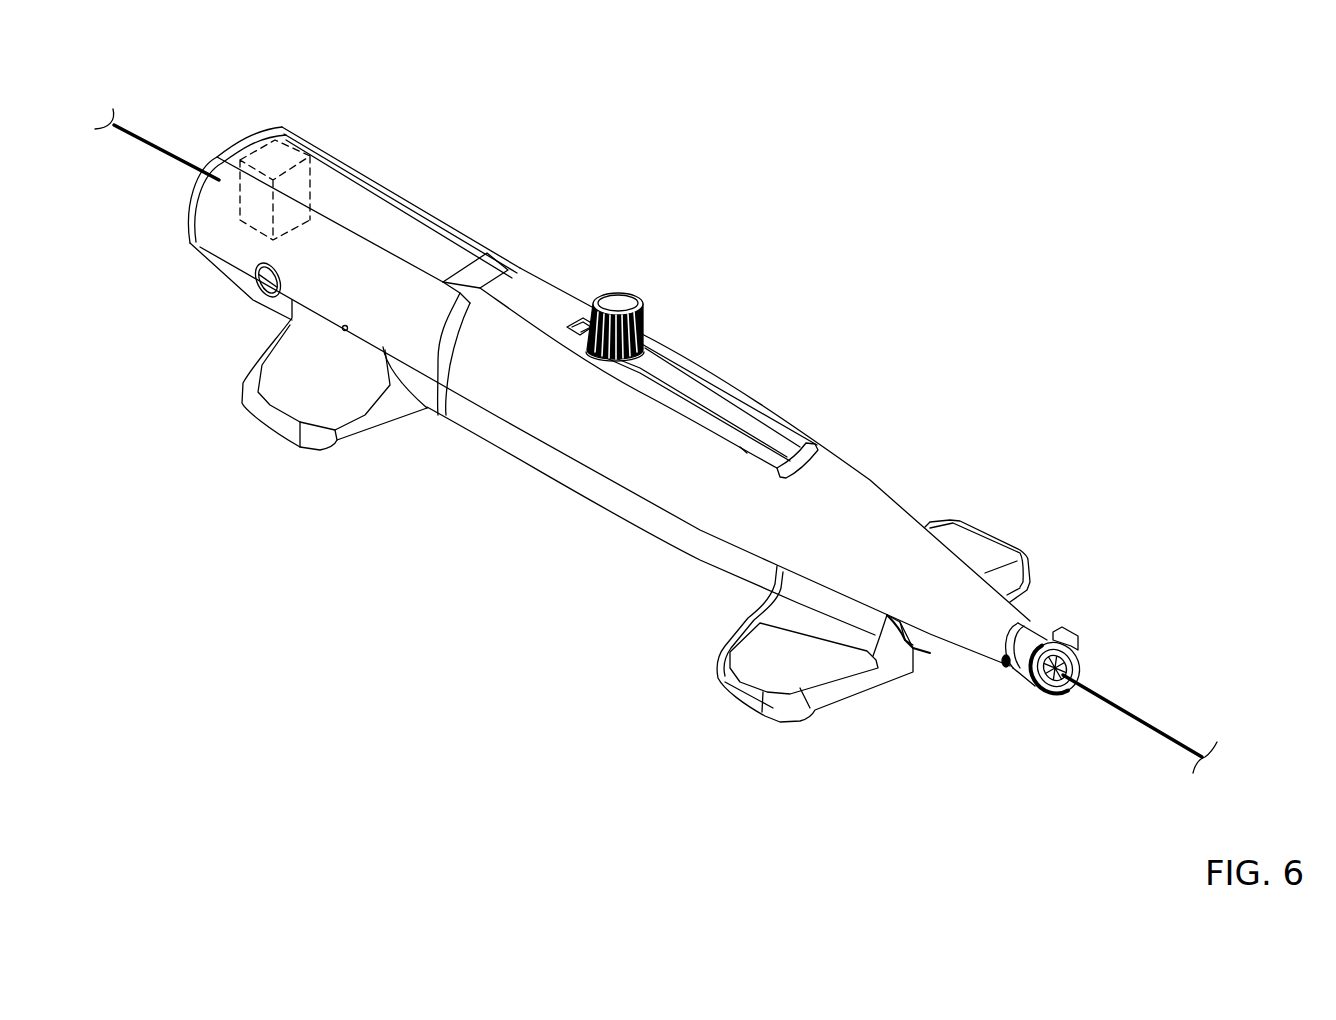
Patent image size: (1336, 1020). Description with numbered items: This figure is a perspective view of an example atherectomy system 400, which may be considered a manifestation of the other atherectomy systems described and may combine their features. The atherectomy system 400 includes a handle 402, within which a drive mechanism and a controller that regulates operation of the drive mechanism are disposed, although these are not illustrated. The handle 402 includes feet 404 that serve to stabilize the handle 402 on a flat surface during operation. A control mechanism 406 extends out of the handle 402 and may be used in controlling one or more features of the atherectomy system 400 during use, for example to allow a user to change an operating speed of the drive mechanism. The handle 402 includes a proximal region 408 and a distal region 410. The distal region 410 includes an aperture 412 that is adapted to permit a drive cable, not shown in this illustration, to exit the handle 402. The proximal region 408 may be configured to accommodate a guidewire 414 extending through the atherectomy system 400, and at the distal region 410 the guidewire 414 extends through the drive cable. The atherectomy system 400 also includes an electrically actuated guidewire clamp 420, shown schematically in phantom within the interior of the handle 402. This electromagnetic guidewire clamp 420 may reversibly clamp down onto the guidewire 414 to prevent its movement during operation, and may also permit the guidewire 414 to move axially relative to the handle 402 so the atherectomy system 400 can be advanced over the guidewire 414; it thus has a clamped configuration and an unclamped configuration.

The atherectomy system 400 is at (1045, 78).
The handle 402 is at (843, 478).
The feet 404 is at (318, 430).
The control mechanism 406 is at (617, 303).
The proximal region 408 is at (316, 100).
The distal region 410 is at (1140, 606).
The aperture 412 is at (1047, 692).
The guidewire 414 is at (160, 140).
The electrically actuated guidewire clamp 420 is at (245, 211).